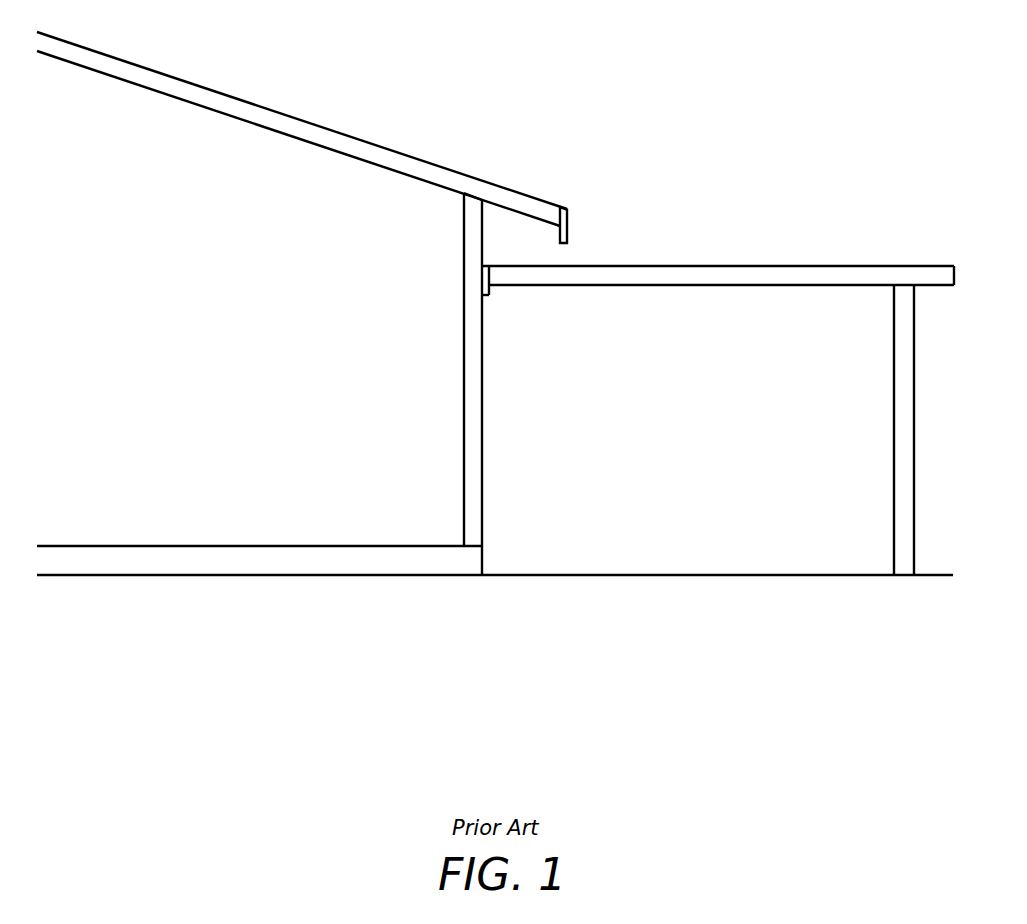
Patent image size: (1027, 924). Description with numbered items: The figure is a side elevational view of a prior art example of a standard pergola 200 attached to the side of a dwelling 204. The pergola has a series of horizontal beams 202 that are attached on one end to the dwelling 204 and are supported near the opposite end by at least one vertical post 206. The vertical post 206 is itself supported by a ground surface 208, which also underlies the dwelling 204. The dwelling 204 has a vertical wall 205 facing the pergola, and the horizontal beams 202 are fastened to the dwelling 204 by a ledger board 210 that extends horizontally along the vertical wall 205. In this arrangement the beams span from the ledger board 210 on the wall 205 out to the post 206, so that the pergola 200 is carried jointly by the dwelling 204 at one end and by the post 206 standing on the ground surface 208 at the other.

The standard pergola 200 is at (755, 310).
The horizontal beams 202 is at (767, 265).
The dwelling 204 is at (258, 606).
The vertical wall 205 is at (483, 418).
The vertical post 206 is at (893, 414).
The ground surface 208 is at (935, 577).
The ledger board 210 is at (490, 295).